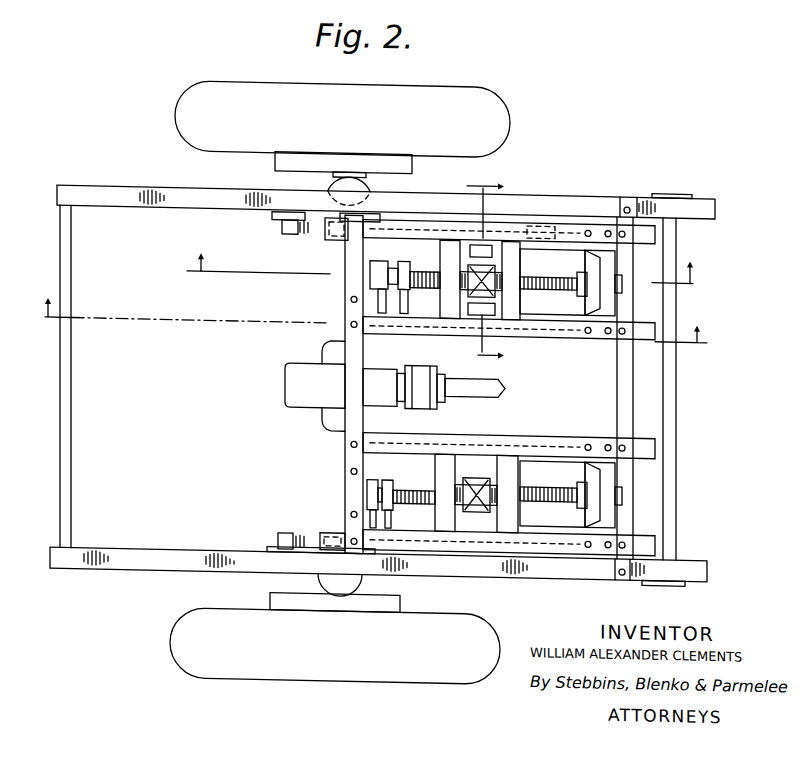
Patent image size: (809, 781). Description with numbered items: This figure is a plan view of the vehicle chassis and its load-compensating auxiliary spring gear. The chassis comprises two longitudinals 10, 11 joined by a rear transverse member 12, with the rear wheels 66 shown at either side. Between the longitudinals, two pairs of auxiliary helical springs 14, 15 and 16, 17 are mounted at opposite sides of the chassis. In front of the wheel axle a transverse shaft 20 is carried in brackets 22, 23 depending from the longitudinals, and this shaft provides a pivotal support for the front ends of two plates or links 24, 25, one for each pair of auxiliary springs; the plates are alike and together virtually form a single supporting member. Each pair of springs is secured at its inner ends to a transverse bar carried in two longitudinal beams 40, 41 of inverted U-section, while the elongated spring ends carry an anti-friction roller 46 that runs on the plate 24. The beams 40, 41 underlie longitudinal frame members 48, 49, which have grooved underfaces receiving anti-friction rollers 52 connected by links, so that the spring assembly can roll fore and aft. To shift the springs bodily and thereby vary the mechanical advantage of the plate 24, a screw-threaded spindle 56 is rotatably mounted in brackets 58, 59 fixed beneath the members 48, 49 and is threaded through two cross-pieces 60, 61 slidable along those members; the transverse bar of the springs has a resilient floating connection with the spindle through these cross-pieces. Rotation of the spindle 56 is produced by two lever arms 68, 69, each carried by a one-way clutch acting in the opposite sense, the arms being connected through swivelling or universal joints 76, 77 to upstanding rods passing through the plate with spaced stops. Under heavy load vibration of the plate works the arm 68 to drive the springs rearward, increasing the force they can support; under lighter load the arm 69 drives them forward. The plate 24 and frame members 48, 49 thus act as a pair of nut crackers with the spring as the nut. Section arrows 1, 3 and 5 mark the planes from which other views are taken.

The section line 1- 1 is at (705, 365).
The section line 3- 3 is at (443, 287).
The section line 5- 5 is at (483, 271).
The longitudinal 10 is at (120, 187).
The longitudinal 11 is at (128, 567).
The rear transverse member 12 is at (72, 403).
The auxiliary helical spring 14 is at (500, 227).
The auxiliary helical spring 15 is at (495, 312).
The auxiliary helical spring 16 is at (477, 462).
The auxiliary helical spring 17 is at (458, 518).
The transverse shaft 20 is at (675, 399).
The bracket 22 is at (660, 180).
The bracket 23 is at (650, 567).
The plate 24 is at (573, 238).
The plate 25 is at (563, 521).
The longitudinal beam 40 is at (447, 218).
The longitudinal beam 41 is at (434, 378).
The anti-friction roller 46 is at (548, 271).
The longitudinal frame member 48 is at (543, 212).
The longitudinal frame member 49 is at (330, 326).
The anti-friction roller 52 is at (560, 328).
The screw-threaded spindle 56 is at (565, 292).
The bracket 58 is at (602, 304).
The bracket 59 is at (345, 277).
The cross-piece 60 is at (453, 228).
The cross-piece 61 is at (540, 212).
The rear wheel 66 is at (482, 78).
The lever arm 68 is at (363, 248).
The lever arm 69 is at (405, 276).
The universal joint 76 is at (352, 233).
The universal joint 77 is at (403, 226).